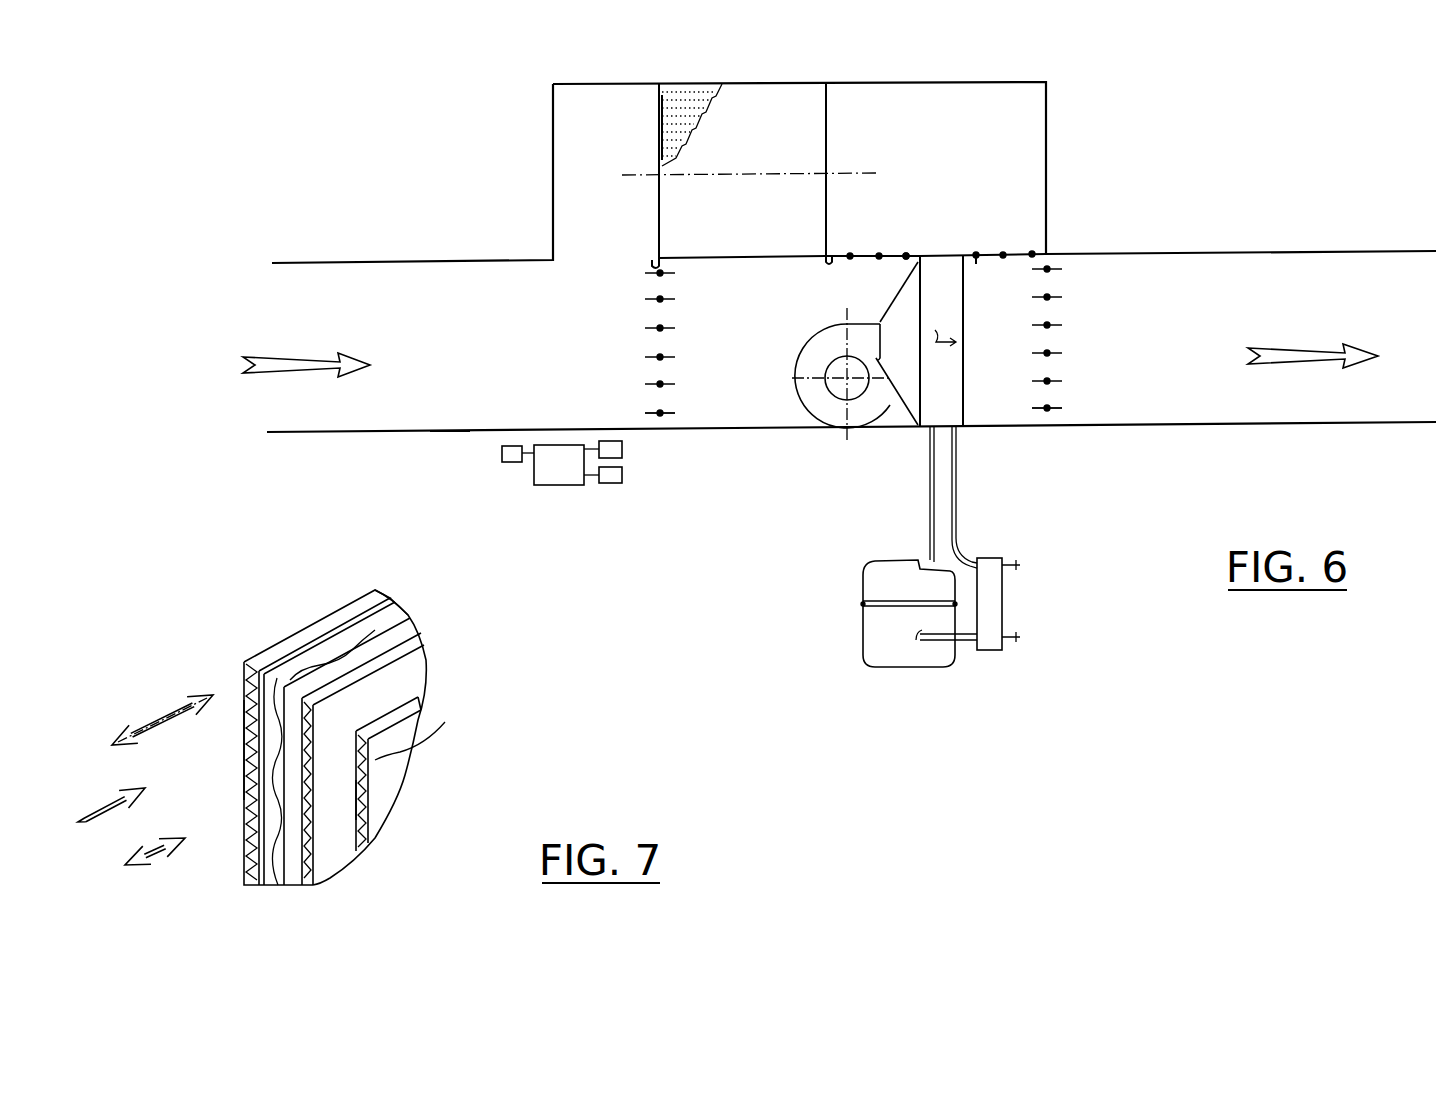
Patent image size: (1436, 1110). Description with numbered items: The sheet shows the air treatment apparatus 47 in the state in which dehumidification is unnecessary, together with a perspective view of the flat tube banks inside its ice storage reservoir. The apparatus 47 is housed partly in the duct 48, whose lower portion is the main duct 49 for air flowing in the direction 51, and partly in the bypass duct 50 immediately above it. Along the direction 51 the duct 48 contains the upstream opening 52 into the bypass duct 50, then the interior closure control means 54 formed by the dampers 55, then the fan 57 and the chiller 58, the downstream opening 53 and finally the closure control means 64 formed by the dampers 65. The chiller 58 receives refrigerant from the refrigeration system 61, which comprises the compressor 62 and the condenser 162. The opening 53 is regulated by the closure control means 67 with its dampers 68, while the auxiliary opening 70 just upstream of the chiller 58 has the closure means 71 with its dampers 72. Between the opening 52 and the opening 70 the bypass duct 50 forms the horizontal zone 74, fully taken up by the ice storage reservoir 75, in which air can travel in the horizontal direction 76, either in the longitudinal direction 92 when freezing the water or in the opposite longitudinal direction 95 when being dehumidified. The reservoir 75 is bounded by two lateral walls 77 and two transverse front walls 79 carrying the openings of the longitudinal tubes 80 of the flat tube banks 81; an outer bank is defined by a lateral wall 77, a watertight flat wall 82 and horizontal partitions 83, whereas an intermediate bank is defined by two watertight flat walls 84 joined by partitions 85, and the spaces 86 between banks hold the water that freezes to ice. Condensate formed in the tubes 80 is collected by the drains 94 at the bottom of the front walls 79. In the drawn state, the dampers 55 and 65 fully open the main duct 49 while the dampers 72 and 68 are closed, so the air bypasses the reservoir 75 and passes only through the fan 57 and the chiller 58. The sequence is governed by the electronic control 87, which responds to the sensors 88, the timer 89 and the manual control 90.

In FIG. 6, the apparatus 47 is at (878, 100).
In FIG. 6, the duct 48 is at (366, 436).
In FIG. 6, the main duct 49 is at (452, 410).
In FIG. 6, the bypass duct 50 is at (1005, 110).
In FIG. 6, the direction 51 is at (941, 341).
In FIG. 6, the upstream opening 52 is at (592, 263).
In FIG. 6, the downstream opening 53 is at (1050, 245).
In FIG. 6, the interior closure control means 54 is at (688, 440).
In FIG. 6, the dampers 55 is at (660, 328).
In FIG. 6, the fan 57 is at (872, 405).
In FIG. 6, the chiller 58 is at (945, 400).
In FIG. 6, the refrigeration system 61 is at (862, 566).
In FIG. 6, the compressor 62 is at (872, 665).
In FIG. 6, the closure control means 64 is at (1062, 416).
In FIG. 6, the dampers 65 is at (1066, 381).
In FIG. 6, the closure control means 67 is at (991, 263).
In FIG. 6, the dampers 68 is at (980, 250).
In FIG. 6, the auxiliary opening 70 is at (855, 248).
In FIG. 6, the closure means 71 is at (870, 262).
In FIG. 6, the dampers 72 is at (882, 250).
In FIG. 6, the horizontal zone 74 is at (845, 92).
In FIG. 6, the ice storage reservoir 75 is at (778, 98).
In FIG. 7, the ice storage reservoir 75 is at (415, 768).
In FIG. 6, the horizontal direction 76 is at (730, 172).
In FIG. 7, the horizontal direction 76 is at (160, 712).
In FIG. 7, the lateral walls 77 is at (240, 775).
In FIG. 7, the front walls 79 is at (337, 852).
In FIG. 6, the longitudinal tubes 80 is at (659, 103).
In FIG. 7, the longitudinal tubes 80 is at (345, 802).
In FIG. 6, the flat tube banks 81 is at (700, 96).
In FIG. 7, the flat tube banks 81 is at (417, 652).
In FIG. 7, the watertight flat wall 82 is at (382, 716).
In FIG. 7, the partitions 83 is at (424, 734).
In FIG. 7, the watertight flat walls 84 is at (395, 618).
In FIG. 7, the partitions 85 is at (312, 734).
In FIG. 7, the spaces 86 is at (353, 703).
In FIG. 6, the electronic control 87 is at (556, 485).
In FIG. 6, the sensors 88 is at (622, 449).
In FIG. 6, the timer 89 is at (507, 462).
In FIG. 6, the manual control 90 is at (620, 483).
In FIG. 7, the longitudinal direction 92 is at (172, 852).
In FIG. 6, the drains 94 is at (656, 256).
In FIG. 7, the longitudinal direction 95 is at (110, 805).
In FIG. 6, the condenser 162 is at (995, 580).